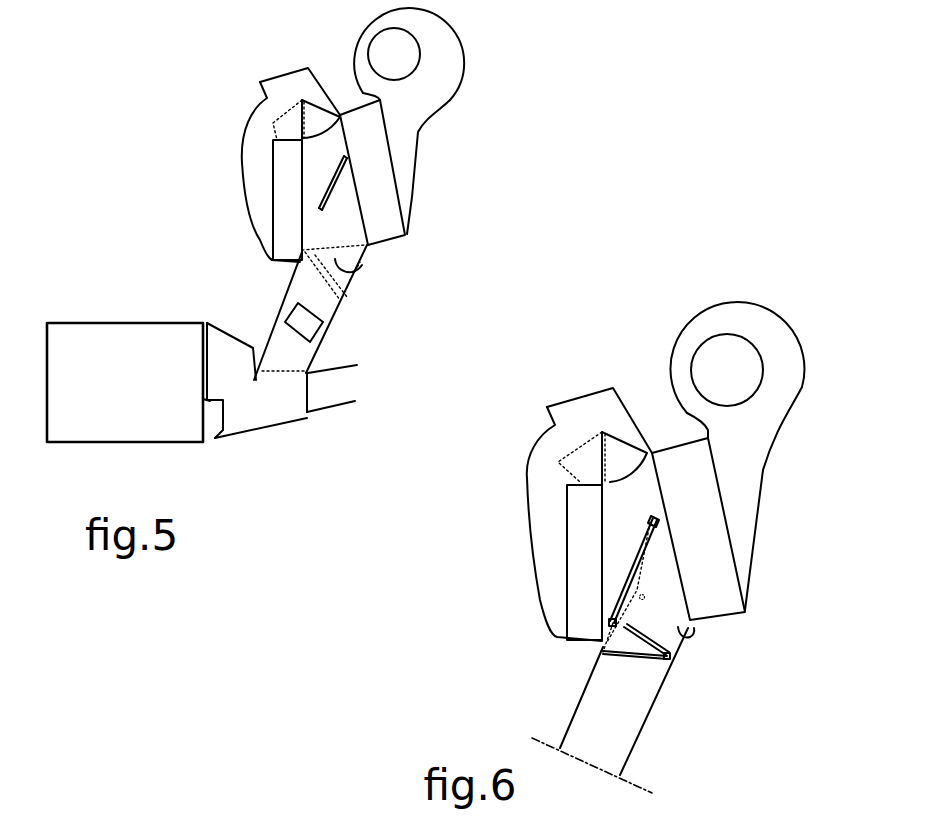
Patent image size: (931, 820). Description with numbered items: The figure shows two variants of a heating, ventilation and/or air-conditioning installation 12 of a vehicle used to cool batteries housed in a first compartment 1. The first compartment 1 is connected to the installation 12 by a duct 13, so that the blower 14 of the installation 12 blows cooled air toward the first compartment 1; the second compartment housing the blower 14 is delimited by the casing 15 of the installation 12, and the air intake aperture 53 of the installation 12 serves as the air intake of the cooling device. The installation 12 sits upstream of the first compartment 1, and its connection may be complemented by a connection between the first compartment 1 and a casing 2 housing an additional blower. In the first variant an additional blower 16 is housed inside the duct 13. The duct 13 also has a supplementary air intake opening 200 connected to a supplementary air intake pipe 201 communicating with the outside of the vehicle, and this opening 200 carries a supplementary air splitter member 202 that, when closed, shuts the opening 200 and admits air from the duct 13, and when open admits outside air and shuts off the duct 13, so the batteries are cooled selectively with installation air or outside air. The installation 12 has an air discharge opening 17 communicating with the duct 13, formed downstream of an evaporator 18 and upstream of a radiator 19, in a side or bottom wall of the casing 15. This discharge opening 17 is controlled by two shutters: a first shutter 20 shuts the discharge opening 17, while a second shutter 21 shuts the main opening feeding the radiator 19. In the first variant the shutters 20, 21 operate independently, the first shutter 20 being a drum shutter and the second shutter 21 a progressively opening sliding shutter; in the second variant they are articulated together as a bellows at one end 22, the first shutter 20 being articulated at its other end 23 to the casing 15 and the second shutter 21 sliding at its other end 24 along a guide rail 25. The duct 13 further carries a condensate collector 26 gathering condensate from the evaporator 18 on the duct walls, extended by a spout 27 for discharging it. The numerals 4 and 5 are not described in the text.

In FIG. 5, the first compartment 1 is at (130, 400).
In FIG. 6, the casing 2 is at (746, 529).
In FIG. 5, the body-side member 4 is at (48, 356).
In FIG. 5, the door plate 5 is at (203, 357).
In FIG. 5, the heating, ventilation and/or air-conditioning installation 12 is at (432, 156).
In FIG. 6, the heating, ventilation and/or air-conditioning installation 12 is at (765, 502).
In FIG. 5, the duct 13 is at (283, 307).
In FIG. 6, the duct 13 is at (632, 753).
In FIG. 5, the blower 14 is at (443, 40).
In FIG. 6, the blower 14 is at (767, 363).
In FIG. 5, the casing 15 is at (415, 197).
In FIG. 6, the casing 15 is at (752, 547).
In FIG. 5, the additional blower 16 is at (329, 327).
In FIG. 5, the air discharge opening 17 is at (362, 266).
In FIG. 6, the air discharge opening 17 is at (690, 623).
In FIG. 5, the evaporator 18 is at (386, 125).
In FIG. 6, the evaporator 18 is at (712, 474).
In FIG. 5, the radiator 19 is at (273, 162).
In FIG. 6, the radiator 19 is at (567, 530).
In FIG. 5, the first shutter 20 is at (300, 212).
In FIG. 6, the first shutter 20 is at (644, 663).
In FIG. 5, the second shutter 21 is at (330, 172).
In FIG. 6, the second shutter 21 is at (600, 652).
In FIG. 6, the end 22 is at (680, 660).
In FIG. 6, the other end 23 is at (597, 643).
In FIG. 6, the other end 24 is at (608, 621).
In FIG. 6, the guide rail 25 is at (623, 548).
In FIG. 5, the condensate collector 26 is at (282, 428).
In FIG. 5, the spout 27 is at (222, 440).
In FIG. 5, the air intake aperture 53 is at (386, 49).
In FIG. 6, the air intake aperture 53 is at (728, 363).
In FIG. 5, the supplementary air intake opening 200 is at (316, 392).
In FIG. 5, the supplementary air intake pipe 201 is at (345, 401).
In FIG. 5, the supplementary air splitter member 202 is at (305, 393).